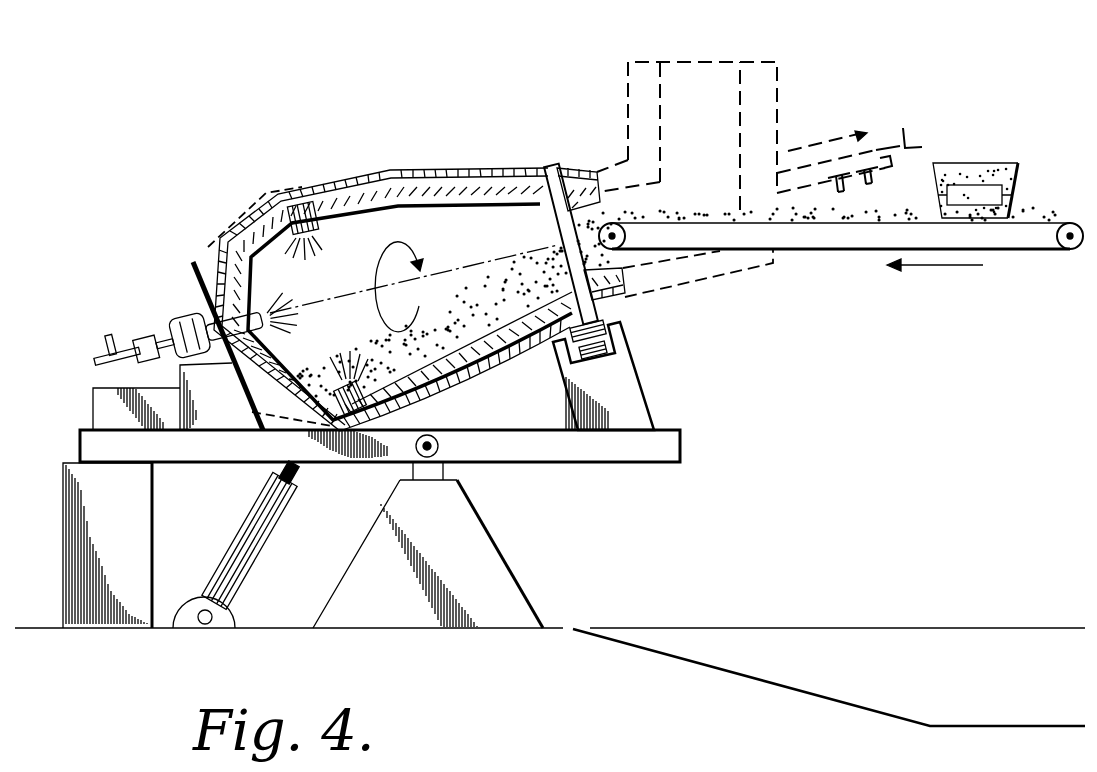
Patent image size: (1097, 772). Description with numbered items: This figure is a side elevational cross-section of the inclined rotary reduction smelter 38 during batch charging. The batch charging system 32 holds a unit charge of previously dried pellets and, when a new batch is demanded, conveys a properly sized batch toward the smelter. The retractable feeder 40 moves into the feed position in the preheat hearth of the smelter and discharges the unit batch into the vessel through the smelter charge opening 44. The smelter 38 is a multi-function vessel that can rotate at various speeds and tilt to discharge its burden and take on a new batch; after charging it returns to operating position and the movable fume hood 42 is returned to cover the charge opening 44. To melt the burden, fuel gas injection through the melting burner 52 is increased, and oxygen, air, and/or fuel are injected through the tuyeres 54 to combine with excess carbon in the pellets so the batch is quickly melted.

The inclined rotary reduction smelter 38 is at (393, 168).
The tuyeres 54 is at (313, 234).
The melting burner 52 is at (263, 312).
The smelter charge opening 44 is at (596, 212).
The movable fume hood 42 is at (747, 62).
The retractable feeder 40 is at (868, 247).
The batch charging system 32 is at (973, 163).